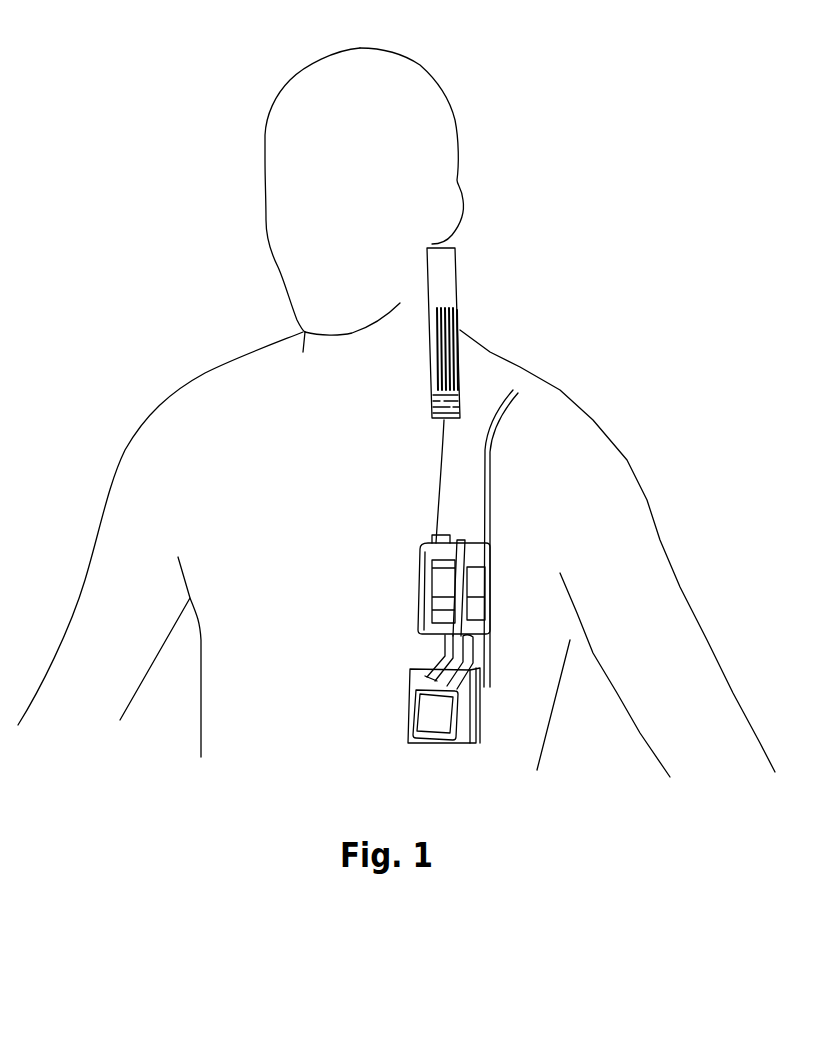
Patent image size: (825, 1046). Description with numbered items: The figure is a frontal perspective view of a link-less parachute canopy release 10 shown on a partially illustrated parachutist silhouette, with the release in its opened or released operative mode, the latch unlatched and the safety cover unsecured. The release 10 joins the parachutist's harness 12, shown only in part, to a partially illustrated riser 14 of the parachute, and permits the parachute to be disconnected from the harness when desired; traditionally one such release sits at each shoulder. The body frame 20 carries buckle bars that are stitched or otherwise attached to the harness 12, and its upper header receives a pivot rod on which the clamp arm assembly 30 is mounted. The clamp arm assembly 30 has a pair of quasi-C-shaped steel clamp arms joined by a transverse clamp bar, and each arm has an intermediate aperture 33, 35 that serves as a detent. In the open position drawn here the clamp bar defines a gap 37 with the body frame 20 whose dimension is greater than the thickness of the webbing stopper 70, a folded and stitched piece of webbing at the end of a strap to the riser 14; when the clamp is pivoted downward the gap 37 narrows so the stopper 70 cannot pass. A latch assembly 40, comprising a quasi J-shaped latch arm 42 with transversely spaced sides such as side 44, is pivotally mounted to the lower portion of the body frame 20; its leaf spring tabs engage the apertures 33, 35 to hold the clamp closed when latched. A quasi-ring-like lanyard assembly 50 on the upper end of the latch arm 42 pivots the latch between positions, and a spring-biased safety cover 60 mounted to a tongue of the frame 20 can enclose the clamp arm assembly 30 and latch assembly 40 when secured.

The link-less parachute canopy release 10 is at (549, 423).
The harness 12 is at (465, 507).
The riser 14 is at (442, 258).
The body frame 20 is at (497, 601).
The clamp arm assembly 30 is at (536, 530).
The aperture 33 is at (418, 538).
The aperture 35 is at (473, 580).
The gap 37 is at (436, 543).
The latch assembly 40 is at (411, 665).
The latch arm 42 is at (457, 683).
The side 44 is at (432, 678).
The lanyard assembly 50 is at (440, 743).
The safety cover 60 is at (487, 724).
The webbing stopper 70 is at (450, 402).